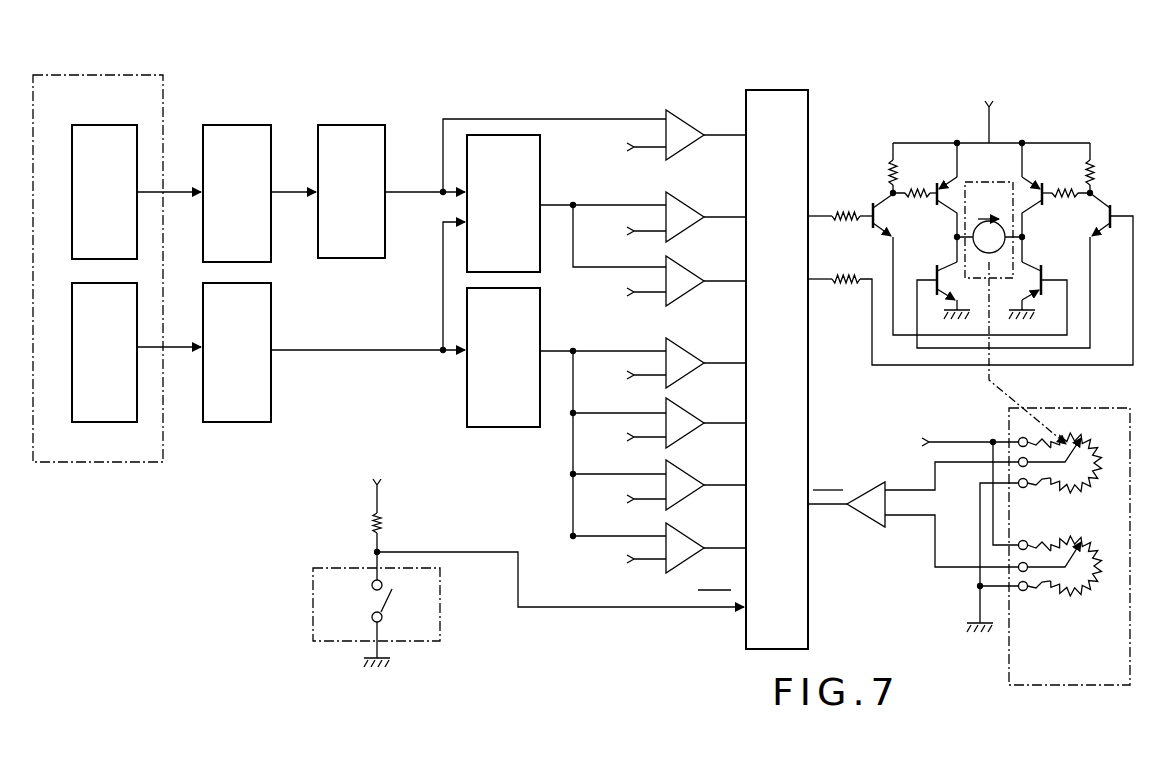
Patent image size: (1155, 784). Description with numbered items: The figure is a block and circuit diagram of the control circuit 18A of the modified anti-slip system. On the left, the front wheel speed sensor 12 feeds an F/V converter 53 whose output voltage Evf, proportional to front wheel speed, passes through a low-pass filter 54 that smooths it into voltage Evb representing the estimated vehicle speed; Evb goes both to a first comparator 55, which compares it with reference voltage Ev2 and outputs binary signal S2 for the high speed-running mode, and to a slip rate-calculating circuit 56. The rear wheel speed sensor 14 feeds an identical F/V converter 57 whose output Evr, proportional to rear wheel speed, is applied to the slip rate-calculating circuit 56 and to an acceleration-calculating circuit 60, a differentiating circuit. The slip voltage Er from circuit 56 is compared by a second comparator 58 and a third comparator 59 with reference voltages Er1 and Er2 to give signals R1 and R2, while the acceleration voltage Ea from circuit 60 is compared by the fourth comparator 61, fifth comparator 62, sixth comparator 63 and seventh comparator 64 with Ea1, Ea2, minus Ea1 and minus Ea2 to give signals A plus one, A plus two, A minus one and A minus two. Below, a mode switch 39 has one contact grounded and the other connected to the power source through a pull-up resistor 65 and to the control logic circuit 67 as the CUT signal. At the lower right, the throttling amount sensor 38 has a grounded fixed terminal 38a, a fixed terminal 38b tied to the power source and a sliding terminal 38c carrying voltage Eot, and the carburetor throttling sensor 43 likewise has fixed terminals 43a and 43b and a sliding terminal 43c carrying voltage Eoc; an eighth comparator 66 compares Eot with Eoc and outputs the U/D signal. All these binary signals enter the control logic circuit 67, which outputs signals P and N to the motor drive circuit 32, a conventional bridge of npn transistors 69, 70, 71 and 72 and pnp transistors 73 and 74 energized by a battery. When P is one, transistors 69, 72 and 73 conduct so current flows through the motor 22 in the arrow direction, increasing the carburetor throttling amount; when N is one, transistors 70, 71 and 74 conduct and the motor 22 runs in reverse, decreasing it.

The control circuit 18A is at (383, 50).
The front wheel speed sensor 12 is at (108, 125).
The rear wheel speed sensor 14 is at (135, 283).
The F/V converter 53 is at (252, 125).
The low-pass filter 54 is at (363, 125).
The F/V converter 57 is at (272, 296).
The slip rate-calculating circuit 56 is at (540, 148).
The acceleration-calculating circuit 60 is at (540, 303).
The first comparator 55 is at (683, 118).
The second comparator 58 is at (688, 204).
The third comparator 59 is at (688, 268).
The fourth comparator 61 is at (684, 355).
The fifth comparator 62 is at (686, 412).
The sixth comparator 63 is at (686, 474).
The seventh comparator 64 is at (685, 535).
The control logic circuit 67 is at (796, 90).
The pull-up resistor 65 is at (384, 519).
The mode switch 39 is at (366, 603).
The motor drive circuit 32 is at (1000, 213).
The npn transistor 69 is at (888, 197).
The npn transistor 70 is at (1112, 205).
The npn transistor 71 is at (946, 264).
The npn transistor 72 is at (1041, 264).
The pnp transistor 73 is at (947, 182).
The pnp transistor 74 is at (1037, 181).
The motor 22 is at (996, 254).
The eighth comparator 66 is at (868, 492).
The carburetor throttling sensor 43 is at (1032, 462).
The fixed terminal 43a is at (1025, 488).
The fixed terminal 43b is at (1019, 439).
The sliding terminal 43c is at (1018, 465).
The throttling amount sensor 38 is at (1021, 574).
The fixed terminal 38a is at (1025, 591).
The fixed terminal 38b is at (1018, 546).
The sliding terminal 38c is at (1018, 569).